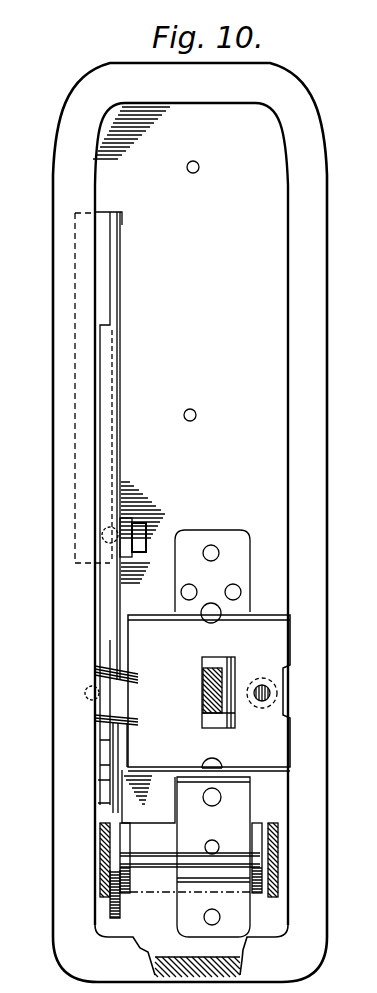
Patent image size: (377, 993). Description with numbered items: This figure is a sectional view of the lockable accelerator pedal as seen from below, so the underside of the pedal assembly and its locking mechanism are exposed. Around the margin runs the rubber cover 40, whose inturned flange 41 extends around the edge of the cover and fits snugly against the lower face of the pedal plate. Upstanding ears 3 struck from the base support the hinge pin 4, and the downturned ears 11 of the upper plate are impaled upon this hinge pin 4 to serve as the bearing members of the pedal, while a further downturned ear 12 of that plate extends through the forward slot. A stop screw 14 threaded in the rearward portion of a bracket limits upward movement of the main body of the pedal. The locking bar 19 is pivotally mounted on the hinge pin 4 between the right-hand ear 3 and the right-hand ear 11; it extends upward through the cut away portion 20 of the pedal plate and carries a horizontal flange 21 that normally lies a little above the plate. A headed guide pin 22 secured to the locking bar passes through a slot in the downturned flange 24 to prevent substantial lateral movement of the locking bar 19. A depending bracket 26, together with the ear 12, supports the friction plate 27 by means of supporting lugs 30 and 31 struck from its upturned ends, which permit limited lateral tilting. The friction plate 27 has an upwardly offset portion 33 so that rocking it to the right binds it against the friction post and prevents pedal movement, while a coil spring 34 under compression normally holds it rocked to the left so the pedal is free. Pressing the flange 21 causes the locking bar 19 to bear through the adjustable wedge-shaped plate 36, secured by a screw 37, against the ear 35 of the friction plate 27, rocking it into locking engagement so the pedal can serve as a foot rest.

The upstanding ears 3 is at (102, 863).
The hinge pin 4 is at (185, 857).
The downturned ears 11 is at (126, 845).
The downturned ear 12 is at (190, 777).
The stop screw 14 is at (204, 915).
The locking bar 19 is at (113, 814).
The cut away portion 20 is at (105, 210).
The horizontal flange 21 is at (75, 450).
The headed guide pin 22 is at (140, 533).
The downturned flange 24 is at (125, 523).
The depending bracket 26 is at (230, 612).
The friction plate 27 is at (167, 627).
The supporting lug 30 is at (212, 603).
The supporting lug 31 is at (205, 683).
The upwardly offset portion 33 is at (222, 722).
The coil spring 34 is at (262, 682).
The ear 35 is at (117, 697).
The wedge-shaped plate 36 is at (107, 744).
The screw 37 is at (90, 686).
The rubber cover 40 is at (70, 125).
The inturned flange 41 is at (292, 322).